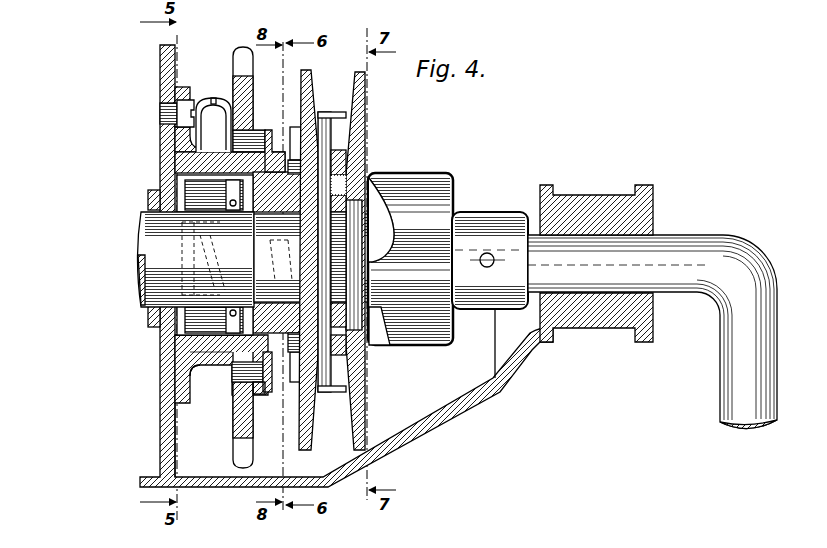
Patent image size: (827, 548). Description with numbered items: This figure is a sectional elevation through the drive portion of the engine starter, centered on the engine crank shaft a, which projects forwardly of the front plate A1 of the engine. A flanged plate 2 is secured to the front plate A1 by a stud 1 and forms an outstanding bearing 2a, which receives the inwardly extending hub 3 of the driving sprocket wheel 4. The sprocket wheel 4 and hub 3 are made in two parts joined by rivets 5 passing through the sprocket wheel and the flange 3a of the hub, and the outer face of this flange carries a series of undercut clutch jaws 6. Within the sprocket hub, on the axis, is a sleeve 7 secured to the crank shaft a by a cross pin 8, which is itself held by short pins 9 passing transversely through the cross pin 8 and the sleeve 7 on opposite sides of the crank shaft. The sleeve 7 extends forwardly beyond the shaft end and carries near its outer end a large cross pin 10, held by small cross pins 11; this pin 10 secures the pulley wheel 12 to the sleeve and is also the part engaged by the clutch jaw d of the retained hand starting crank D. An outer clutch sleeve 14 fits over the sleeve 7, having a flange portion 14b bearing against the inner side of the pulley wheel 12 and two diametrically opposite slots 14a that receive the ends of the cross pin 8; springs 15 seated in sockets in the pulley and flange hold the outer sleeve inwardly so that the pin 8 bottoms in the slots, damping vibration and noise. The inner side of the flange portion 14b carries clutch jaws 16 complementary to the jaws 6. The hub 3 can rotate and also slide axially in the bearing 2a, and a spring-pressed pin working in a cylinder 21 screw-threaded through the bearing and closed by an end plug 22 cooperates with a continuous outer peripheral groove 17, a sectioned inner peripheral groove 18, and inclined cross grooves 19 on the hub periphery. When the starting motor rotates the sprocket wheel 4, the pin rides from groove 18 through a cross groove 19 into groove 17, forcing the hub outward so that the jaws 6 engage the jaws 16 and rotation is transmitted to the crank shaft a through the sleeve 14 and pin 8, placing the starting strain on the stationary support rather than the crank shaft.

The front plate A1 is at (160, 68).
The stud 1 is at (160, 114).
The flanged plate 2 is at (184, 88).
The bearing 2a is at (175, 152).
The hub 3 is at (175, 173).
The flange 3a is at (260, 394).
The sprocket wheel 4 is at (243, 50).
The rivets 5 is at (252, 138).
The clutch jaws 6 is at (274, 257).
The sleeve 7 is at (180, 320).
The cross pin 8 is at (158, 198).
The short pins 9 is at (233, 207).
The cross pin 10 is at (369, 176).
The small cross pins 11 is at (382, 190).
The pulley wheel 12 is at (363, 112).
The clutch sleeve 14 is at (228, 356).
The slots 14a is at (175, 354).
The flange portion 14b is at (305, 383).
The springs 15 is at (360, 151).
The clutch jaws 16 is at (296, 135).
The peripheral groove 17 is at (188, 385).
The peripheral groove 18 is at (168, 410).
The cross grooves 19 is at (190, 256).
The cylinder 21 is at (213, 127).
The end plug 22 is at (214, 98).
The crank shaft a is at (136, 240).
The clutch jaw d is at (410, 259).
The starting crank D is at (714, 235).